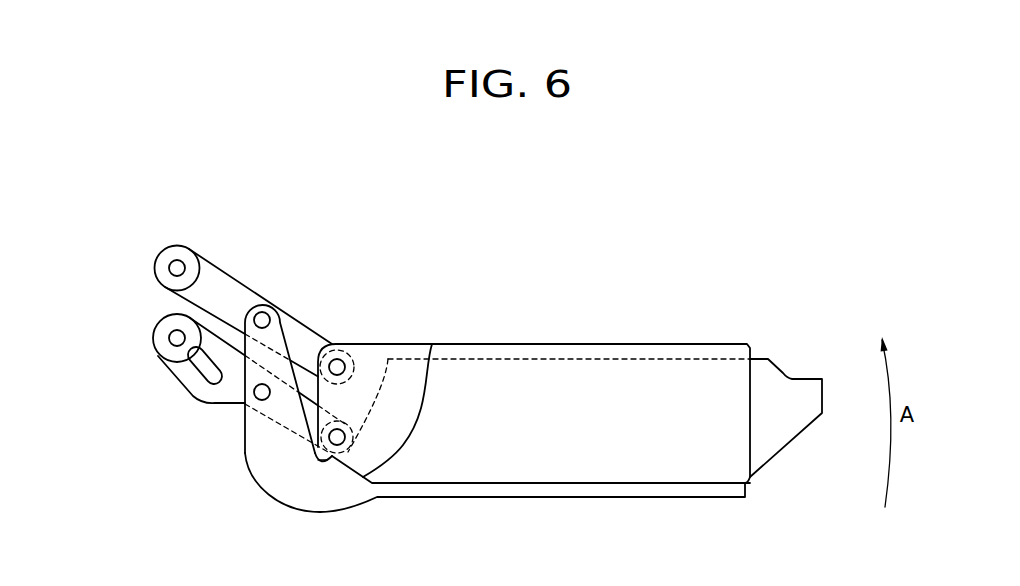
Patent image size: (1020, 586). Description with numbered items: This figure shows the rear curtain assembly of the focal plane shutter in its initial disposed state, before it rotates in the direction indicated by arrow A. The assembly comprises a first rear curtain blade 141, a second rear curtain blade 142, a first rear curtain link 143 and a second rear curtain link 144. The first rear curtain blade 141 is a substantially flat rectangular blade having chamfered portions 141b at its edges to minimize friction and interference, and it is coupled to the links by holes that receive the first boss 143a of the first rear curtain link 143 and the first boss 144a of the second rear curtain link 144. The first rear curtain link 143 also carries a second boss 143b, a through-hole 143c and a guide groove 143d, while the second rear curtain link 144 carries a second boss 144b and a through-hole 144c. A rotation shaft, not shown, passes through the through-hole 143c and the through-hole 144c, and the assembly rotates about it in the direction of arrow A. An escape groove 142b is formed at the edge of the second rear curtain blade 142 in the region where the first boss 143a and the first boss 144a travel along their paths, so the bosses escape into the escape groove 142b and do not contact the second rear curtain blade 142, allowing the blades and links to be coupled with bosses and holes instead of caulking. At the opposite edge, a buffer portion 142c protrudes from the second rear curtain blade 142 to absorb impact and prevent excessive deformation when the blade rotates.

The first rear curtain blade 141 is at (580, 344).
The chamfered portion 141b is at (432, 344).
The second rear curtain blade 142 is at (595, 497).
The escape groove 142b is at (334, 442).
The buffer portion 142c is at (802, 418).
The first rear curtain link 143 is at (172, 396).
The first boss 143a is at (340, 435).
The second boss 143b is at (262, 398).
The through-hole 143c is at (176, 338).
The guide groove 143d is at (206, 377).
The second rear curtain link 144 is at (222, 260).
The first boss 144a is at (337, 360).
The second boss 144b is at (263, 320).
The through-hole 144c is at (177, 268).